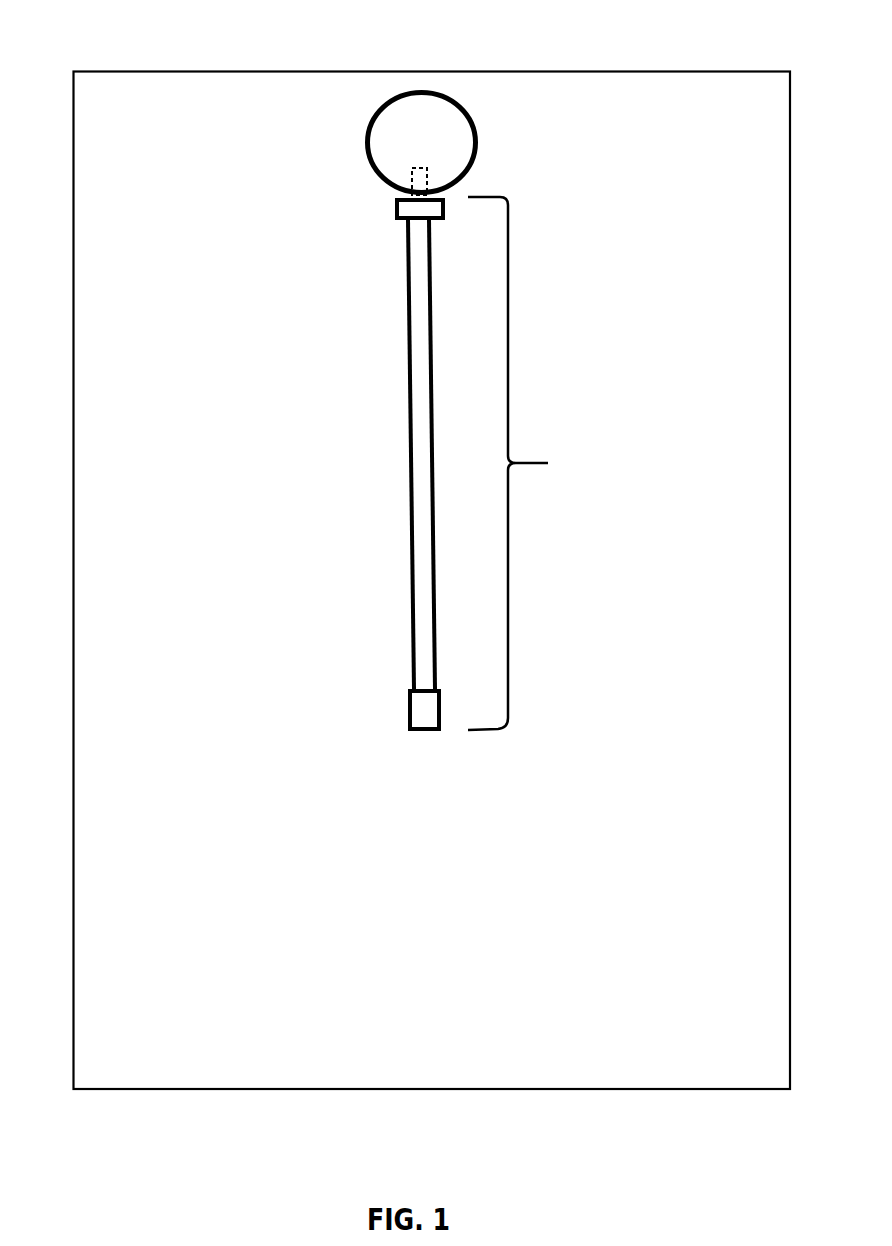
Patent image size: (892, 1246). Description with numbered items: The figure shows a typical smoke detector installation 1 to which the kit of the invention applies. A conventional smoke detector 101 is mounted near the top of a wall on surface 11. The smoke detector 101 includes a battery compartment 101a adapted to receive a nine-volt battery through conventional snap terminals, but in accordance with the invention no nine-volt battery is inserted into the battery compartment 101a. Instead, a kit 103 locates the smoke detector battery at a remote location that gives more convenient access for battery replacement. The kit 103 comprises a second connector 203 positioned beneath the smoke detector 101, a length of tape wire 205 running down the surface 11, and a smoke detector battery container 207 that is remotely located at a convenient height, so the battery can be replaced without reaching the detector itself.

The smoke detector installation 1 is at (726, 1176).
The surface 11 is at (675, 160).
The smoke detector 101 is at (478, 142).
The battery compartment 101a is at (418, 167).
The kit 103 is at (432, 436).
The second connector 203 is at (407, 210).
The tape wire 205 is at (410, 357).
The smoke detector battery container 207 is at (423, 708).